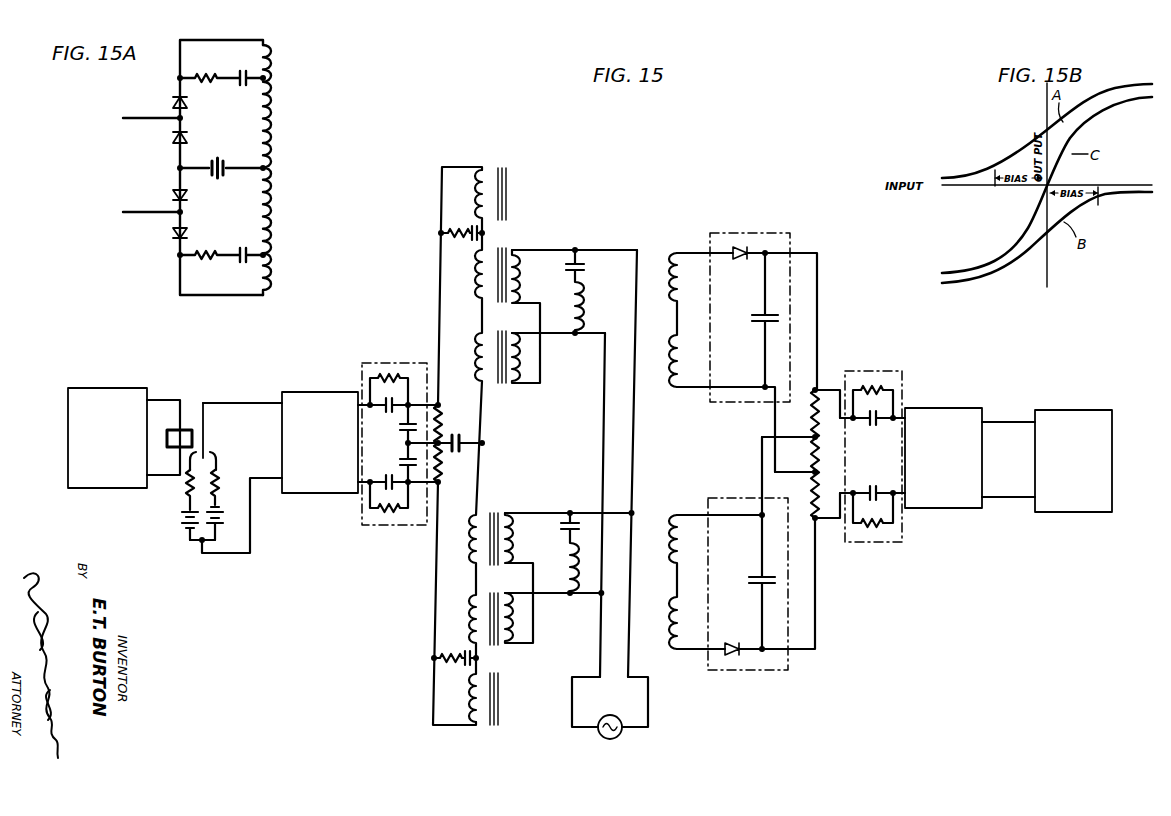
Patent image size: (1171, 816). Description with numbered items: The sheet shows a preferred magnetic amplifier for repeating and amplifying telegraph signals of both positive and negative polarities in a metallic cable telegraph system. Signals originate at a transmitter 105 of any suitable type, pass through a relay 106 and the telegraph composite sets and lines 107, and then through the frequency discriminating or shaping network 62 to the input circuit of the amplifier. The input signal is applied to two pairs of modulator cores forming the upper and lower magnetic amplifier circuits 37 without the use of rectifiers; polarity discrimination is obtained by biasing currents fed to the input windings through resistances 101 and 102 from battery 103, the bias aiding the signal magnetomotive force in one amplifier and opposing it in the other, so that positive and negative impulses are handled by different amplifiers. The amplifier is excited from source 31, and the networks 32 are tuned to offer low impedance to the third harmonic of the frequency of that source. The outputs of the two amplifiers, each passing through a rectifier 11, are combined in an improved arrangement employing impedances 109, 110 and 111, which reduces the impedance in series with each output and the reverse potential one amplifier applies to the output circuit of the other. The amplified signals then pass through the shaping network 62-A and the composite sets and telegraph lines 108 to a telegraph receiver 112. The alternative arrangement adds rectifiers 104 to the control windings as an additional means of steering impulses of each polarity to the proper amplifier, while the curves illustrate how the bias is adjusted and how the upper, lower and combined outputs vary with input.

In FIG. 15, the rectifier 11 is at (733, 233).
In FIG. 15, the source 31 is at (621, 737).
In FIG. 15, the tuned network 32 is at (583, 283).
In FIG. 15, the magnetic amplifier circuit 37 is at (452, 197).
In FIG. 15A, the magnetic amplifier circuit 37 is at (202, 60).
In FIG. 15, the frequency discriminating or shaping network 62 is at (406, 363).
In FIG. 15, the shaping network 62-A is at (866, 371).
In FIG. 15, the resistance 101 is at (420, 431).
In FIG. 15, the resistance 102 is at (440, 467).
In FIG. 15, the battery 103 is at (457, 433).
In FIG. 15A, the battery 103 is at (215, 152).
In FIG. 15A, the rectifier 104 is at (172, 106).
In FIG. 15, the transmitter 105 is at (108, 392).
In FIG. 15, the relay 106 is at (184, 430).
In FIG. 15, the telegraph composite sets and lines 107 is at (312, 392).
In FIG. 15, the composite sets and telegraph lines 108 is at (936, 408).
In FIG. 15, the impedance 109 is at (820, 408).
In FIG. 15, the impedance 110 is at (817, 438).
In FIG. 15, the impedance 111 is at (817, 476).
In FIG. 15, the telegraph receiver 112 is at (1078, 410).